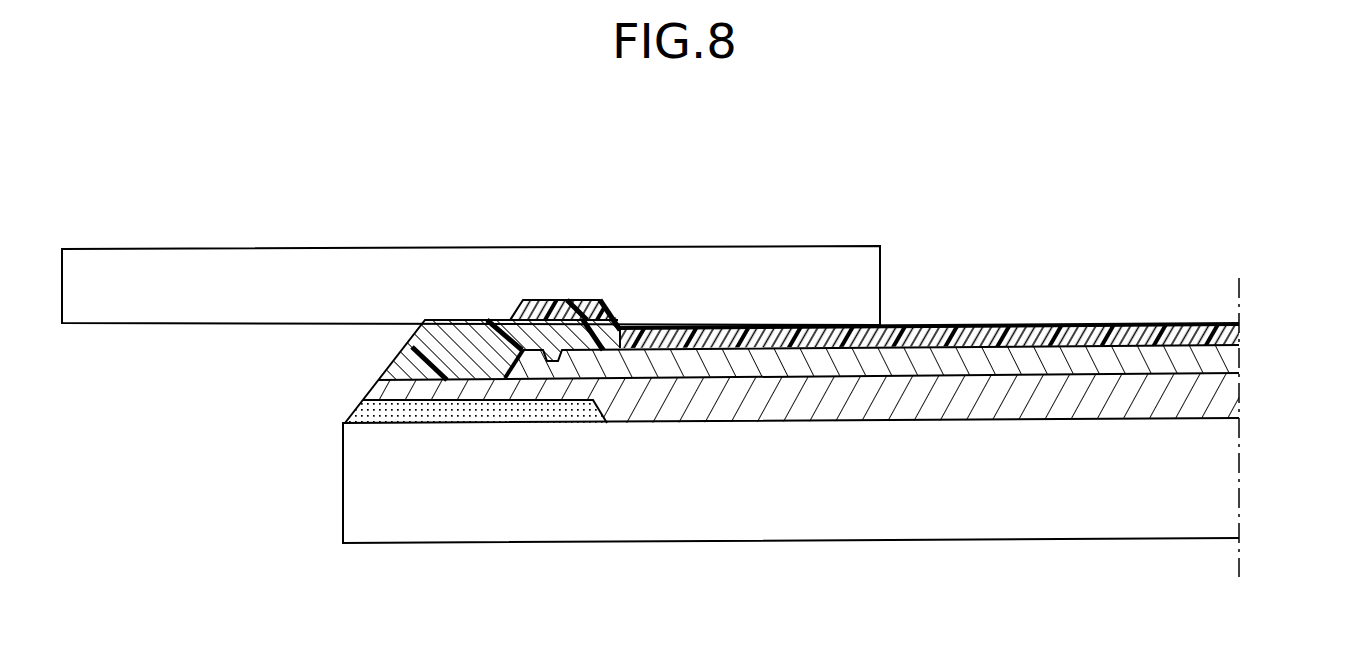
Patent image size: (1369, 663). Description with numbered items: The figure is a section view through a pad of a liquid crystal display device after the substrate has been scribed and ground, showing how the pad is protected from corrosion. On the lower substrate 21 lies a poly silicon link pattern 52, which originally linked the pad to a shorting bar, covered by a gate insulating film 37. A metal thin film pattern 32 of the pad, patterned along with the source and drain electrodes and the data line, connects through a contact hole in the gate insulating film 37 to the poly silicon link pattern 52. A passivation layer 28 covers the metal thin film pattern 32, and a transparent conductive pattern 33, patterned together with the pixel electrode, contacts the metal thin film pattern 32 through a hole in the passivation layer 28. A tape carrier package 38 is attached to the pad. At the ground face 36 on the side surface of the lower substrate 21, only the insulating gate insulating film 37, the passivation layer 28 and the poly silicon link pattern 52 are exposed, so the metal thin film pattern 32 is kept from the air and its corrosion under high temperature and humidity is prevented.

The lower substrate 21 is at (1228, 512).
The passivation layer 28 is at (402, 358).
The metal thin film pattern 32 is at (1228, 358).
The transparent conductive pattern 33 is at (580, 298).
The ground face 36 is at (778, 515).
The gate insulating film 37 is at (1228, 405).
The tape carrier package 38 is at (469, 248).
The poly silicon link pattern 52 is at (378, 413).